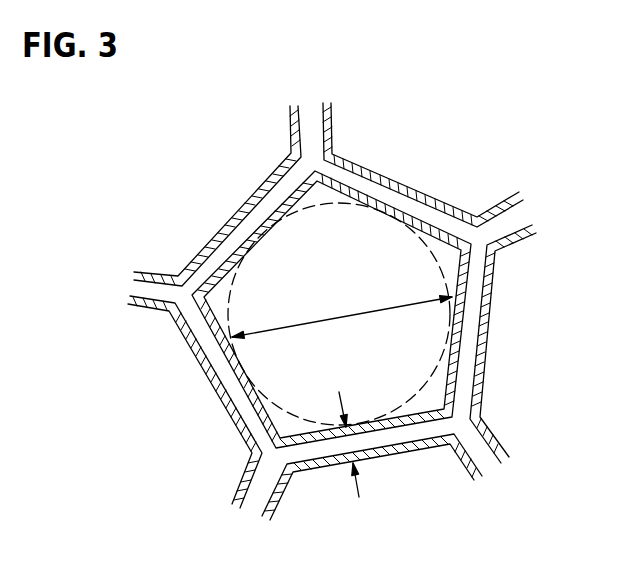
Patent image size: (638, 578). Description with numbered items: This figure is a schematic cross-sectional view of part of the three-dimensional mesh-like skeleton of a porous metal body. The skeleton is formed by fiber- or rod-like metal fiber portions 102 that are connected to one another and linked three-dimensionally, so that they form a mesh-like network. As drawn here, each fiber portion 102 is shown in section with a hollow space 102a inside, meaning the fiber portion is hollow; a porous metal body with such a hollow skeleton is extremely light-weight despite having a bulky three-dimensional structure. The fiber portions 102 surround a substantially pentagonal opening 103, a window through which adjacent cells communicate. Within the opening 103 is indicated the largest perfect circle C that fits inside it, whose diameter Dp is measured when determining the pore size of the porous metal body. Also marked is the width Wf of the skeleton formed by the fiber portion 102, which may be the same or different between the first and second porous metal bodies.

The fiber portion 102 is at (495, 290).
The hollow space 102a is at (465, 350).
The opening 103 is at (350, 289).
The diameter of largest perfect circle Dp is at (278, 330).
The largest perfect circle C is at (232, 338).
The width of skeleton Wf is at (330, 466).